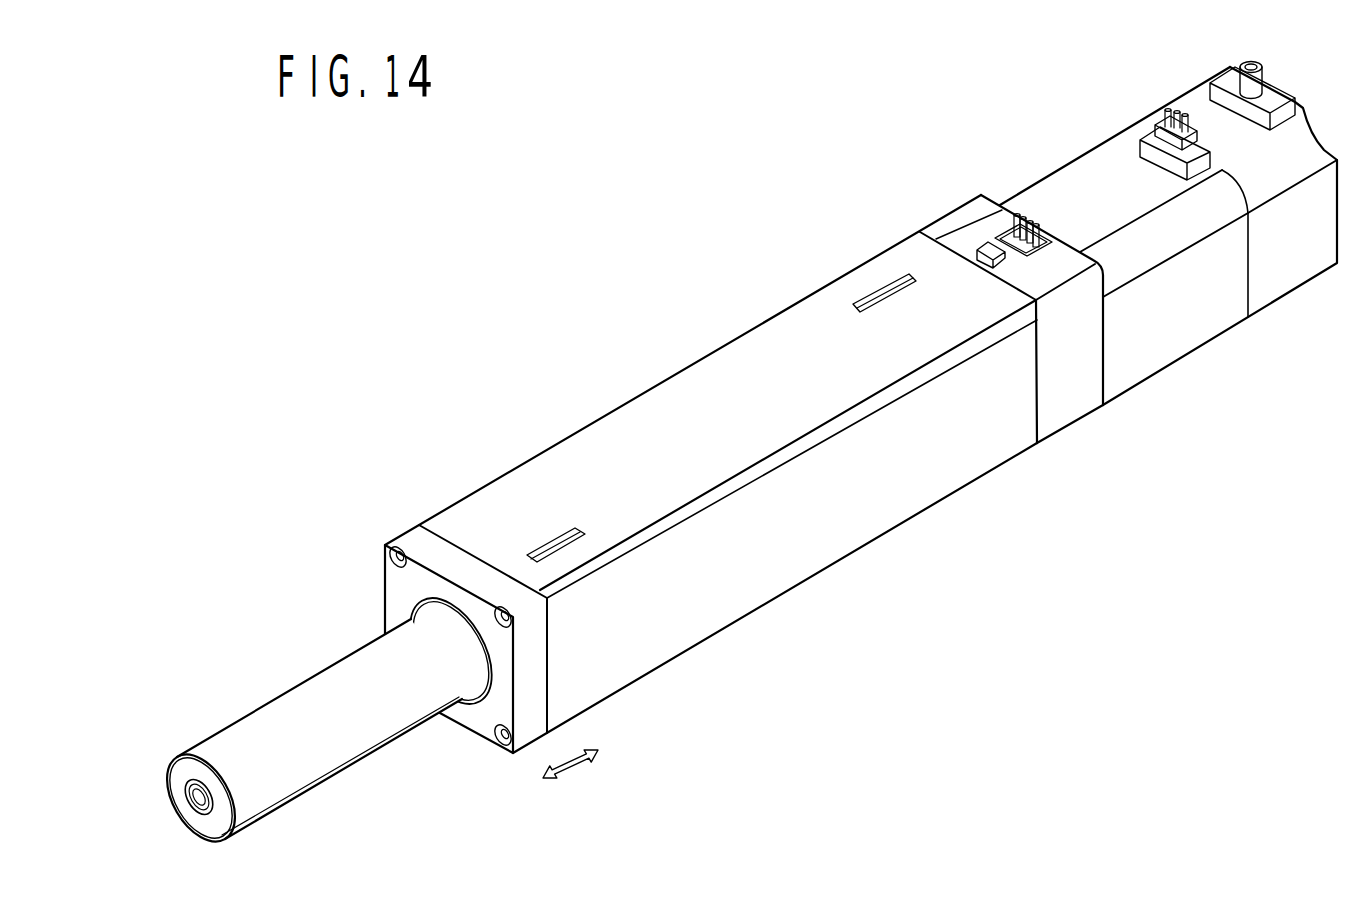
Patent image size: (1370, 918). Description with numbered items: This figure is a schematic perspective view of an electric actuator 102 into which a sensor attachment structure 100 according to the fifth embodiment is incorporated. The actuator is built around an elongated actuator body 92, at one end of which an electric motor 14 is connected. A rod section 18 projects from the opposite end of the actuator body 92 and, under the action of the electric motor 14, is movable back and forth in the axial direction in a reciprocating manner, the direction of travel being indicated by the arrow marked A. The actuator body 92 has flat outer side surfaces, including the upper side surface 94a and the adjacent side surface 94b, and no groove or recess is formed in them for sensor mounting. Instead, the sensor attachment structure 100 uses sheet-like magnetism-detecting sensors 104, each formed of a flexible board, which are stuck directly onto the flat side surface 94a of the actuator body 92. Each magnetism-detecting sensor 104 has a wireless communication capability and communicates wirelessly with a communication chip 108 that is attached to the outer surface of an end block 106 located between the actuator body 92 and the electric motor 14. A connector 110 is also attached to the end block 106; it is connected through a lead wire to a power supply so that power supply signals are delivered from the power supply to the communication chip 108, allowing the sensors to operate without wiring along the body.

The electric motor 14 is at (1105, 138).
The rod section 18 is at (390, 720).
The actuator body 92 is at (711, 474).
The side surface 94a is at (677, 437).
The side surface 94b is at (707, 577).
The sensor attachment structure 100 is at (508, 517).
The electric actuator 102 is at (722, 133).
The magnetism-detecting sensor 104 is at (560, 530).
The end block 106 is at (1054, 299).
The communication chip 108 is at (983, 245).
The connector 110 is at (1032, 237).